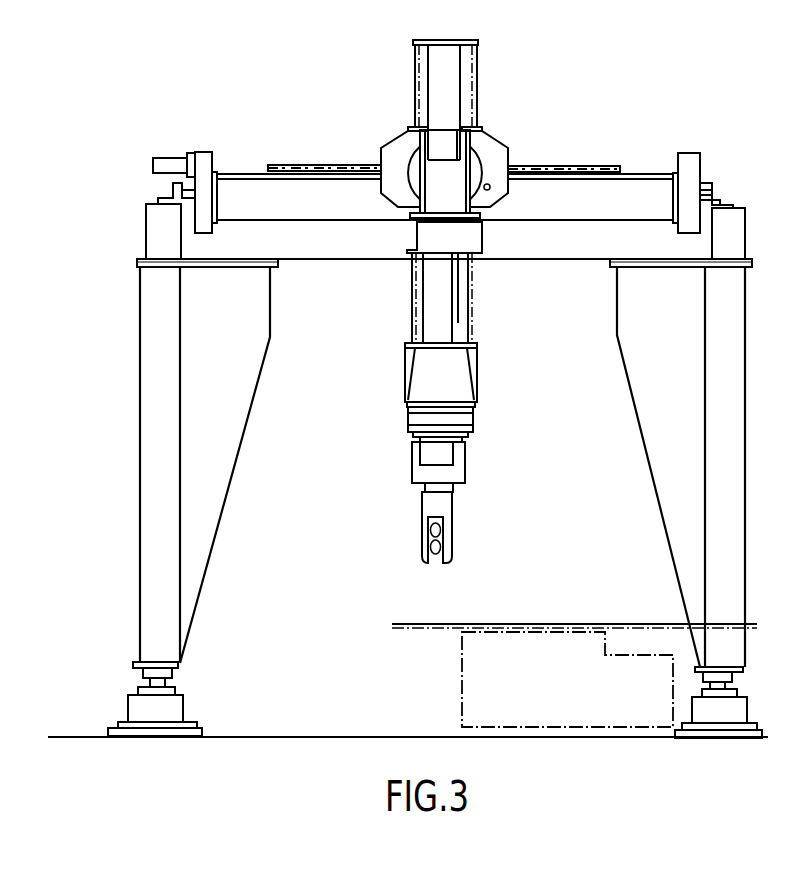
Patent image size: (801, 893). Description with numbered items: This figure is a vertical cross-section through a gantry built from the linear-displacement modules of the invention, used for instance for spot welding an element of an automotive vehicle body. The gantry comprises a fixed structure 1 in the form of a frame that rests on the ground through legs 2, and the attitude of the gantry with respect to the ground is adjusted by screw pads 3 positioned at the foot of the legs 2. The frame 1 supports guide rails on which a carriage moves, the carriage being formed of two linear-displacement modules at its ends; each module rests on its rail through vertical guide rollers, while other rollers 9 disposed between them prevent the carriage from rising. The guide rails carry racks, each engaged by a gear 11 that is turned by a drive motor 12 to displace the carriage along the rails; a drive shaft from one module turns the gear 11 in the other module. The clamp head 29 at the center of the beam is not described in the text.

The fixed structure 1 is at (737, 233).
The legs 2 is at (141, 482).
The screw pads 3 is at (177, 703).
The rollers 9 is at (181, 205).
The gear 11 is at (173, 185).
The drive motor 12 is at (172, 165).
The clamp head 29 is at (396, 142).